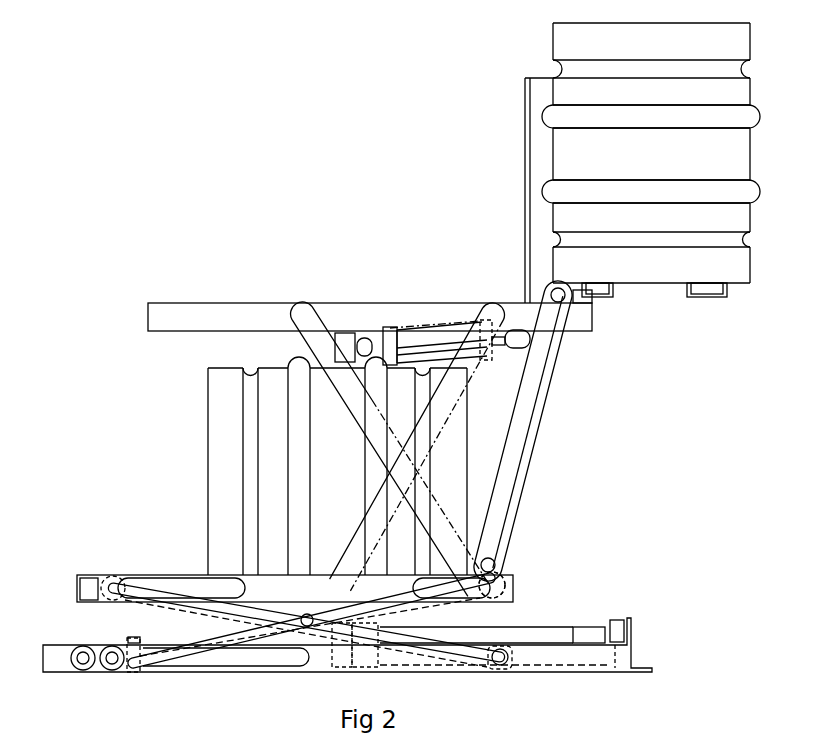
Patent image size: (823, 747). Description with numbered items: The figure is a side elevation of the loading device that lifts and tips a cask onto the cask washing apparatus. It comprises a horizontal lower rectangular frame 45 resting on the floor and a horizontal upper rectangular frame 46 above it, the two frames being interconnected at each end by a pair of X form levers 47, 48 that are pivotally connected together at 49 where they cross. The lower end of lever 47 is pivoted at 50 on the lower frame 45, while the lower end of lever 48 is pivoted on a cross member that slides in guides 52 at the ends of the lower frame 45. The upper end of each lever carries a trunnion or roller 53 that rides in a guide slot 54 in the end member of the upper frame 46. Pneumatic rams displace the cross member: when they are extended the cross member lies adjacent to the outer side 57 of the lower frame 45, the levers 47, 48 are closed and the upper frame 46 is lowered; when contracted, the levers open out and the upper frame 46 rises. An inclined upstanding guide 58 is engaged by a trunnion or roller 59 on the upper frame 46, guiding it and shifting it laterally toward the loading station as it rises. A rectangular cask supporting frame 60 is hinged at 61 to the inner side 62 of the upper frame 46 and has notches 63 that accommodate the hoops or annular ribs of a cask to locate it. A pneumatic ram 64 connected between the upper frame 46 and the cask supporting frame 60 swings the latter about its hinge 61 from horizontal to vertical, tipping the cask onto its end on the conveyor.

The lower rectangular frame 45 is at (560, 668).
The upper rectangular frame 46 is at (320, 578).
The lever 47 is at (142, 596).
The lever 48 is at (233, 638).
The pivot 49 is at (307, 628).
The pivot 50 is at (503, 666).
The guides 52 is at (247, 672).
The trunnion or roller 53 is at (122, 590).
The guide slot 54 is at (181, 575).
The outer side 57 is at (42, 655).
The upstanding guide 58 is at (545, 412).
The trunnion or roller 59 is at (496, 560).
The cask supporting frame 60 is at (525, 163).
The hinge 61 is at (555, 290).
The inner side 62 is at (503, 582).
The notches 63 is at (548, 108).
The pneumatic ram 64 is at (432, 330).